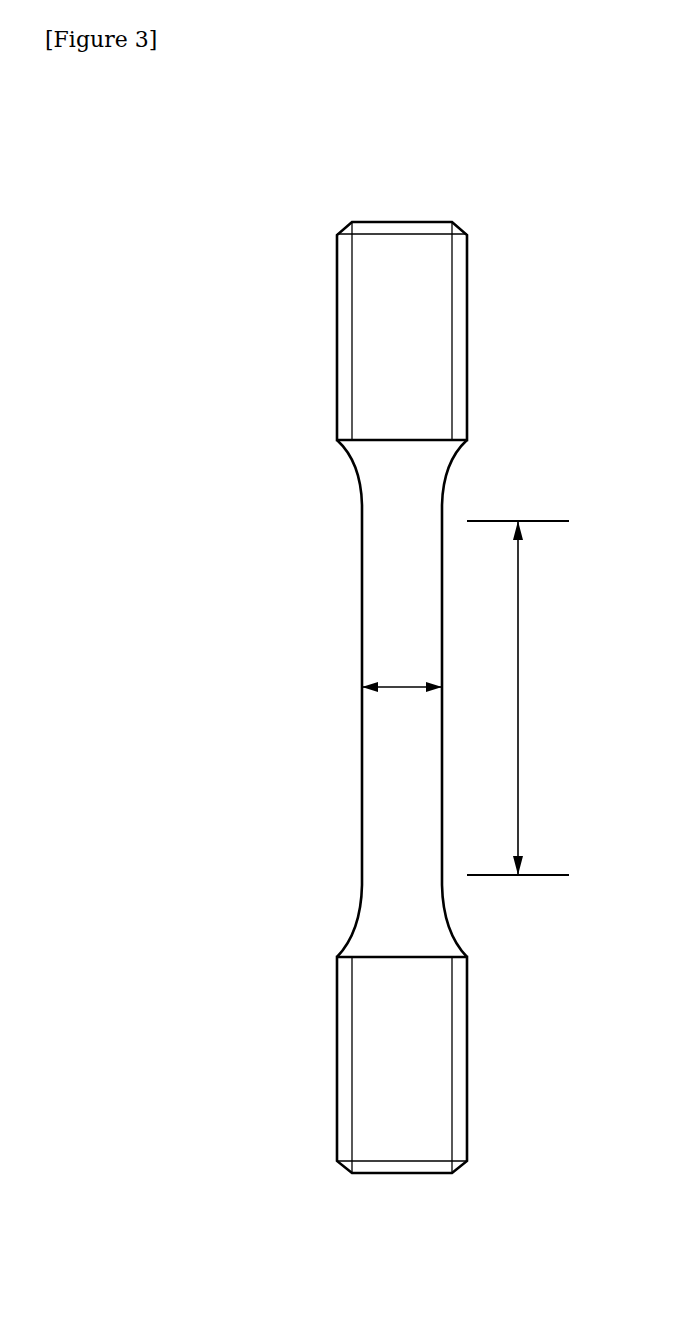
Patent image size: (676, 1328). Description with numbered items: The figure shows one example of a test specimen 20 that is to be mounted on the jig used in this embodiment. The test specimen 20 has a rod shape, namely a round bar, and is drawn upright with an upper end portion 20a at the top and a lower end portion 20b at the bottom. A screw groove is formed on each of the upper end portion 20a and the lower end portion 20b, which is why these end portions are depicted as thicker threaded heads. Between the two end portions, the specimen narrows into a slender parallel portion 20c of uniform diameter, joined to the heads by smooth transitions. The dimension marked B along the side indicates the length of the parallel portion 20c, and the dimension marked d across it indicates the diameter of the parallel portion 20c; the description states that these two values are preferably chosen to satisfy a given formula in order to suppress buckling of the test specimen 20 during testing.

The test specimen 20 is at (272, 208).
The upper end portion 20a is at (422, 247).
The lower end portion 20b is at (383, 1152).
The parallel portion 20c is at (387, 617).